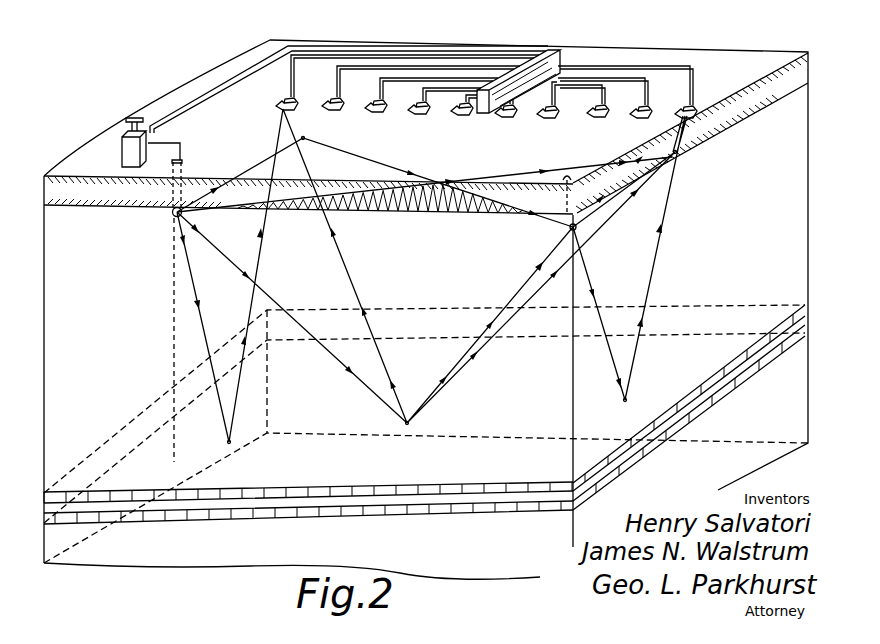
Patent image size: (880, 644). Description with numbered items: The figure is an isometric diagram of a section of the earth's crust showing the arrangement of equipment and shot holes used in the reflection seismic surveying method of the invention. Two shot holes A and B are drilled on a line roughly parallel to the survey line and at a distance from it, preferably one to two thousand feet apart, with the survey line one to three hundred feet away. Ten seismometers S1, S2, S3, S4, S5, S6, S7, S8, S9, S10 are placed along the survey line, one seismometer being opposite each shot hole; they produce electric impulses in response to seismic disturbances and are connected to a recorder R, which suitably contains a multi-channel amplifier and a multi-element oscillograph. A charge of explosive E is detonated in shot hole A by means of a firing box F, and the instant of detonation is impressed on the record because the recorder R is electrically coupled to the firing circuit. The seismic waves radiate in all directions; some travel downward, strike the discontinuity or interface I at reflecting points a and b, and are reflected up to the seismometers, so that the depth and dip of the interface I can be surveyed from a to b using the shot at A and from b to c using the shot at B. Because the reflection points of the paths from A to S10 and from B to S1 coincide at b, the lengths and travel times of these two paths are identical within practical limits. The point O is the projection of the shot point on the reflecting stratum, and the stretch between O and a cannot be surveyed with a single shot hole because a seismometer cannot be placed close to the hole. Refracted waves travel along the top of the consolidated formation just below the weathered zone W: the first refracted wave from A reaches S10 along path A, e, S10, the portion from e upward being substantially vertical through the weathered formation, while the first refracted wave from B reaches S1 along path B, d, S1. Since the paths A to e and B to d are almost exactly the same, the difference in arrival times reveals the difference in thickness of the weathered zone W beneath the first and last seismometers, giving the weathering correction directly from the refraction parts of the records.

The firing box F is at (121, 153).
The recorder R is at (545, 56).
The seismometer S1 is at (279, 107).
The seismometer S2 is at (331, 111).
The seismometer S3 is at (374, 113).
The seismometer S4 is at (417, 115).
The seismometer S5 is at (460, 116).
The seismometer S6 is at (504, 118).
The seismometer S7 is at (546, 119).
The seismometer S8 is at (595, 118).
The seismometer S9 is at (637, 119).
The seismometer S10 is at (676, 117).
The weathered zone W is at (737, 118).
The shot hole A is at (171, 213).
The charge of explosive E is at (173, 219).
The shot hole B is at (569, 229).
The reflecting point a is at (228, 443).
The reflecting point b is at (409, 424).
The reflecting point c is at (625, 402).
The refraction point d is at (280, 145).
The refraction point e is at (668, 148).
The projection of the shot point O is at (170, 352).
The interface I is at (690, 392).